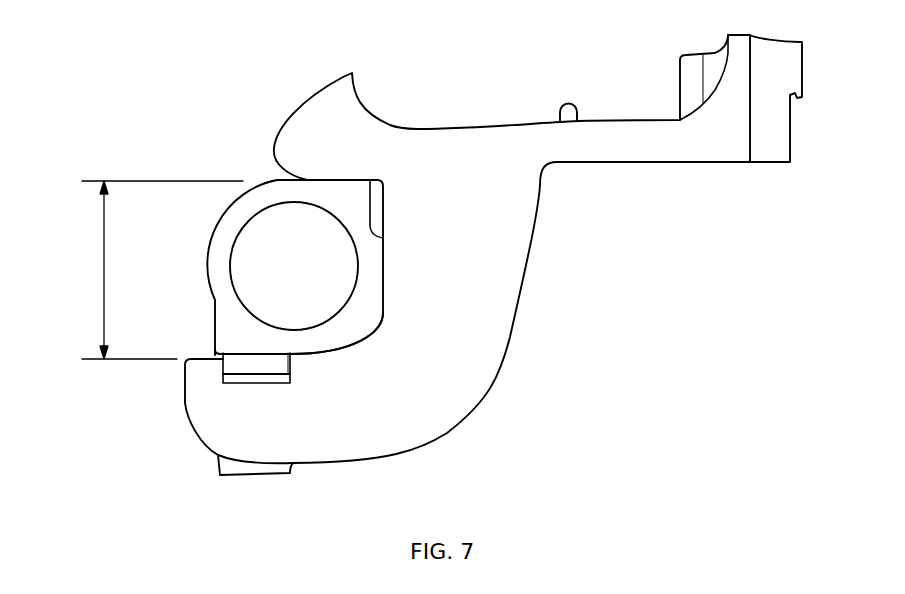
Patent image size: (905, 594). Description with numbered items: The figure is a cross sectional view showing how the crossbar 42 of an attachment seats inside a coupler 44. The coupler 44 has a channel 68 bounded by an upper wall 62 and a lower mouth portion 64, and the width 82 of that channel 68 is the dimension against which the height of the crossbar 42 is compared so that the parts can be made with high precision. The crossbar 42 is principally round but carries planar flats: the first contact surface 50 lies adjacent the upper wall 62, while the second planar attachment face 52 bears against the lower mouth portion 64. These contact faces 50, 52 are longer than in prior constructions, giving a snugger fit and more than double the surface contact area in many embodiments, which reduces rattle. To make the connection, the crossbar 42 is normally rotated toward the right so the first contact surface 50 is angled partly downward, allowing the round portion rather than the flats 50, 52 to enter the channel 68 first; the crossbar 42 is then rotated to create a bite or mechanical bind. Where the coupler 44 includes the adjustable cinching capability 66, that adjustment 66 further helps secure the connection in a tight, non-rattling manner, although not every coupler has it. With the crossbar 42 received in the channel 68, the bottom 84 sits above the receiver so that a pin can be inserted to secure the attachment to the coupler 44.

The coupler 44 is at (393, 106).
The bottom 84 is at (693, 68).
The crossbar 42 is at (198, 262).
The upper wall 62 is at (337, 178).
The first contact surface 50 is at (353, 181).
The second planar attachment face 52 is at (281, 353).
The adjustable cinching capability 66 is at (262, 360).
The channel 68 is at (360, 330).
The lower mouth portion 64 is at (350, 340).
The width 82 is at (103, 268).